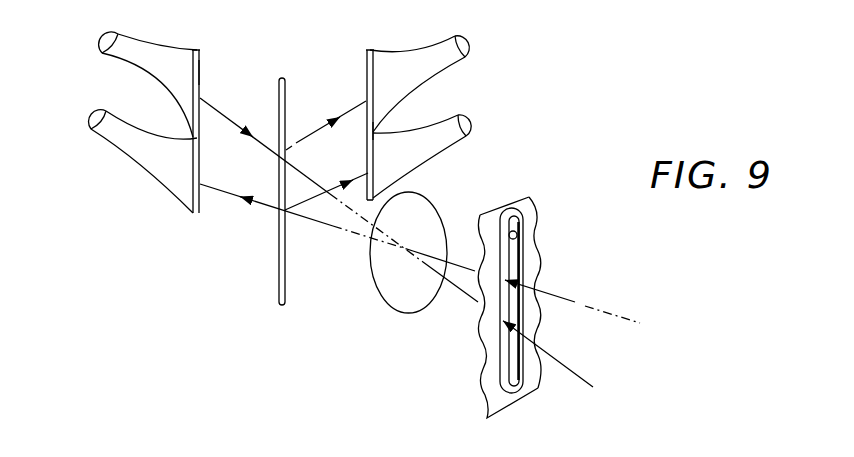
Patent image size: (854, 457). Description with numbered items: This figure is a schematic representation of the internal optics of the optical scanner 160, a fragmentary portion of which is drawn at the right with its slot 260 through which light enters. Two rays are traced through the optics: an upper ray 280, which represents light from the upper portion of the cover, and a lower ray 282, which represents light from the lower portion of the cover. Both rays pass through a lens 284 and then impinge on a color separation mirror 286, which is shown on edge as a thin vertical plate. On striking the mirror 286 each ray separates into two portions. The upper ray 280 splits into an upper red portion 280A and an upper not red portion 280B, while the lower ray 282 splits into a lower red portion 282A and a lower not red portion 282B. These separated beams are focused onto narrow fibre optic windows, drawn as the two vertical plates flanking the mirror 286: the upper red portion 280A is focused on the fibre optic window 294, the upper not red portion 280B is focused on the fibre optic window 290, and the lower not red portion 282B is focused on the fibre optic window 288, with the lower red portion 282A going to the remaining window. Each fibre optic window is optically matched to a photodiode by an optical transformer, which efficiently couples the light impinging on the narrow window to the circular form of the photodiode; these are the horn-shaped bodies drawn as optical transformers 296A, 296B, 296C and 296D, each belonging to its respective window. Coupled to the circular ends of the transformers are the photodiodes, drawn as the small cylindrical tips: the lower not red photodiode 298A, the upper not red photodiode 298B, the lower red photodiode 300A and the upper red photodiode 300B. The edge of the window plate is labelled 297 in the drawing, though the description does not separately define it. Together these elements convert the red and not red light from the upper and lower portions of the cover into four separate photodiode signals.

The optical scanner 160 is at (520, 188).
The slot 260 is at (517, 232).
The upper ray 280 is at (574, 301).
The upper red portion 280A is at (222, 198).
The upper not red portion 280B is at (327, 188).
The lower ray 282 is at (564, 364).
The lower red portion 282A is at (226, 120).
The lower not red portion 282B is at (304, 131).
The lens 284 is at (390, 278).
The color separation mirror 286 is at (256, 207).
The fibre optic window 288 is at (366, 50).
The fibre optic window 290 is at (380, 135).
The fibre optic window 294 is at (199, 213).
The optical transformer 296A is at (433, 60).
The optical transformer 296B is at (421, 157).
The optical transformer 296C is at (153, 62).
The optical transformer 296D is at (147, 153).
The reflective edge 297 is at (198, 72).
The lower not red photodiode 298A is at (470, 43).
The upper not red photodiode 298B is at (474, 131).
The lower red photodiode 300A is at (99, 47).
The upper red photodiode 300B is at (96, 131).